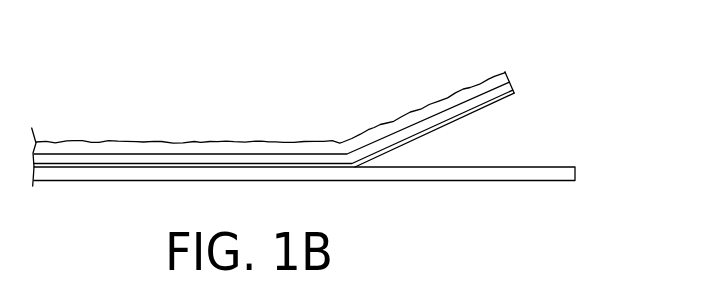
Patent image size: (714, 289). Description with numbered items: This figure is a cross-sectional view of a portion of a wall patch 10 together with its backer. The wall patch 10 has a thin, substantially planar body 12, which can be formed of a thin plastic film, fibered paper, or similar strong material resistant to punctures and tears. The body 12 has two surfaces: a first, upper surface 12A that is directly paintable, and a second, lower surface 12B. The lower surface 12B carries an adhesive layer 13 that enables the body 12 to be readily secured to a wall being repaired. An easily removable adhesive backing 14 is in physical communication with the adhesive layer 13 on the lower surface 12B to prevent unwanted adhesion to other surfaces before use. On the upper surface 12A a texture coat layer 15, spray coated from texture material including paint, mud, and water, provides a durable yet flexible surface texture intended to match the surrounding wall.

The wall patch 10 is at (132, 104).
The body 12 is at (510, 82).
The first upper surface 12A is at (469, 97).
The second lower surface 12B is at (440, 121).
The adhesive layer 13 is at (505, 95).
The removable adhesive backing 14 is at (492, 174).
The texture coat layer 15 is at (403, 114).